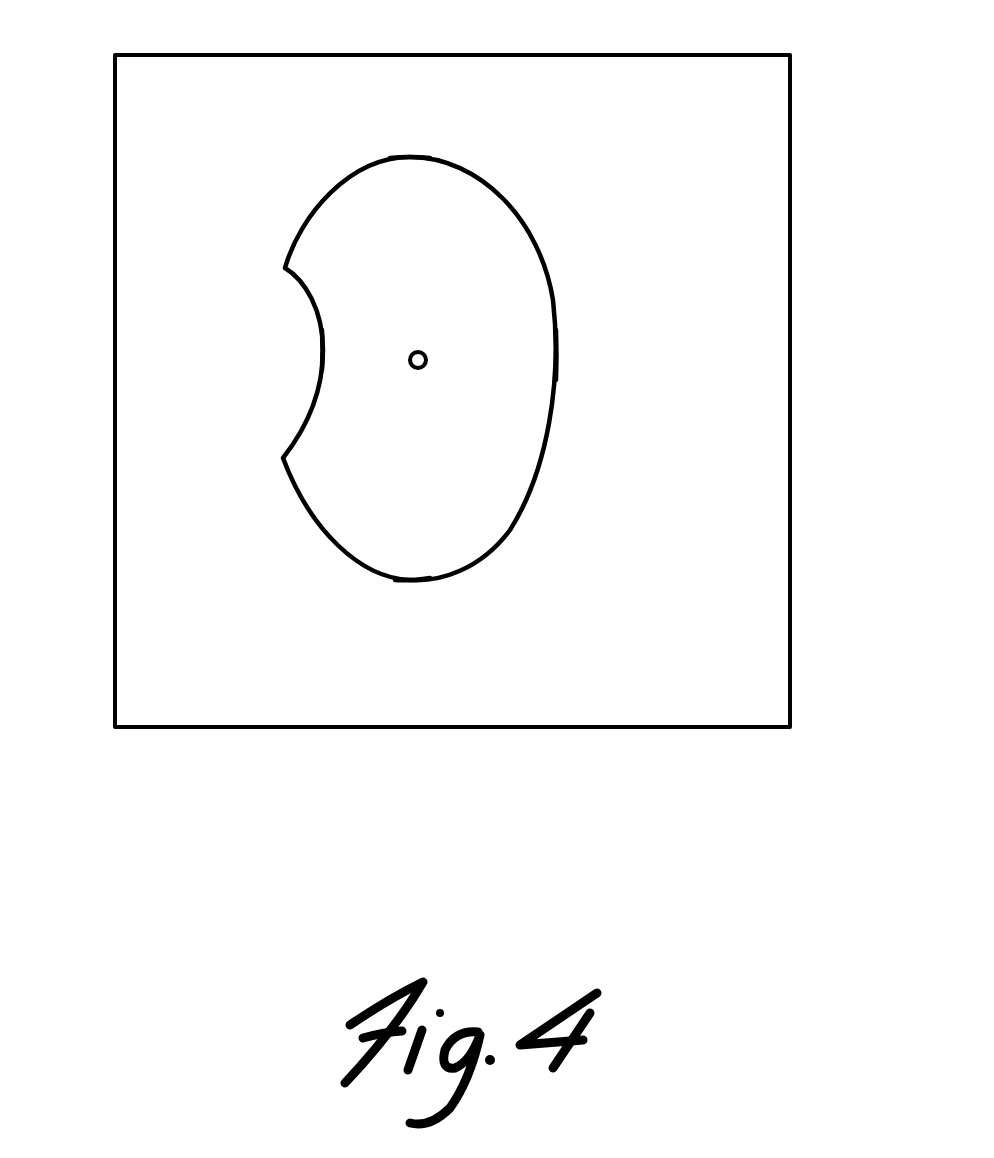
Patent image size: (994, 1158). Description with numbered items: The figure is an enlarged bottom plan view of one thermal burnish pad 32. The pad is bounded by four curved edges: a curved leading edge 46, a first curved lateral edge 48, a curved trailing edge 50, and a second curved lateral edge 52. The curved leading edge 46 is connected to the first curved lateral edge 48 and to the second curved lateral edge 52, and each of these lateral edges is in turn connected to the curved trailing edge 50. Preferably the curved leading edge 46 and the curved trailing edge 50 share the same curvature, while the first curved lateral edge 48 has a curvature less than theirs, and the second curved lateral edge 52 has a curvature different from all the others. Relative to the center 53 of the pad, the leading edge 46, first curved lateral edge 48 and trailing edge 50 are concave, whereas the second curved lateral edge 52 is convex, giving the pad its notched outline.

The thermal burnish pad 32 is at (517, 205).
The curved leading edge 46 is at (423, 155).
The first curved lateral edge 48 is at (558, 355).
The curved trailing edge 50 is at (422, 577).
The second curved lateral edge 52 is at (323, 348).
The center 53 is at (426, 355).